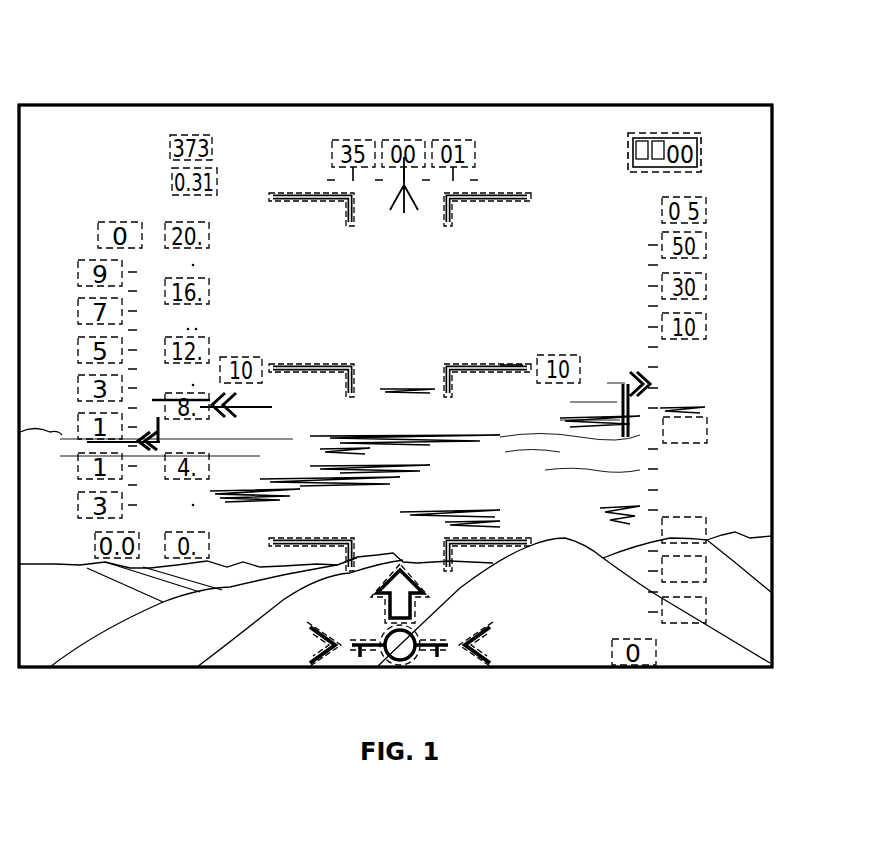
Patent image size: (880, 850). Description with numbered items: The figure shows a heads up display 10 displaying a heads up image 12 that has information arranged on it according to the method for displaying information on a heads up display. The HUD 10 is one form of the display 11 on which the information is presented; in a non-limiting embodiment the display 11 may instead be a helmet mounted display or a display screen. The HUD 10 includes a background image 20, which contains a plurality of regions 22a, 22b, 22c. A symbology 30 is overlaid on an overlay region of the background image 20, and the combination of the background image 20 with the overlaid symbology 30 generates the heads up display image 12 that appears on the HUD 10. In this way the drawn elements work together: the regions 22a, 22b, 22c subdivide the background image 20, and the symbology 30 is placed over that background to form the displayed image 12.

The heads up display 10 is at (130, 50).
The display 11 is at (130, 50).
The heads up image 12 is at (77, 113).
The background image 20 is at (560, 655).
The region 22a is at (688, 518).
The region 22b is at (662, 573).
The region 22c is at (662, 603).
The symbology 30 is at (716, 425).